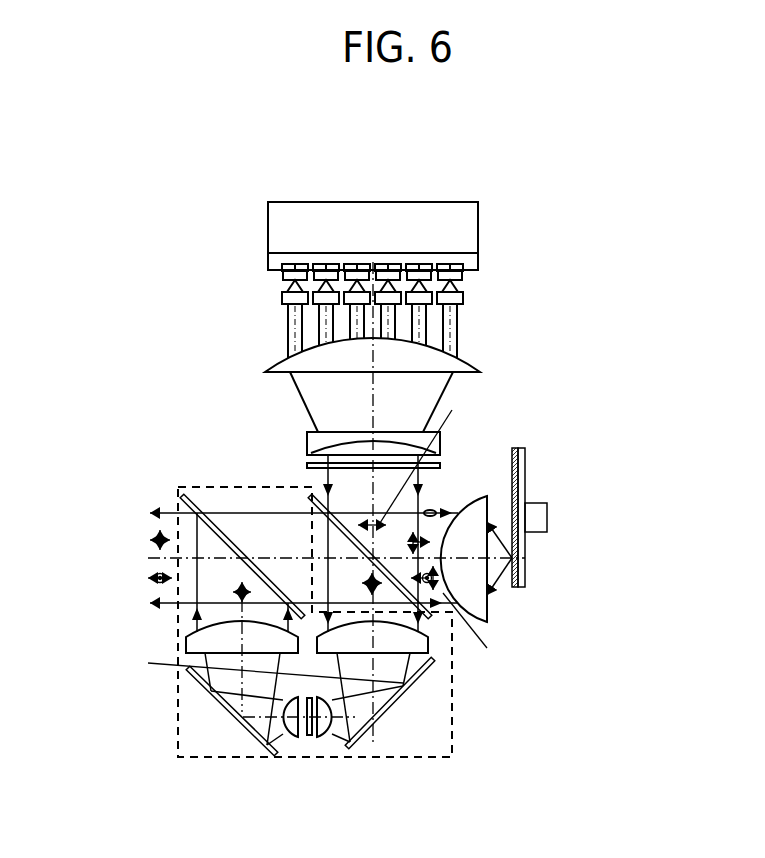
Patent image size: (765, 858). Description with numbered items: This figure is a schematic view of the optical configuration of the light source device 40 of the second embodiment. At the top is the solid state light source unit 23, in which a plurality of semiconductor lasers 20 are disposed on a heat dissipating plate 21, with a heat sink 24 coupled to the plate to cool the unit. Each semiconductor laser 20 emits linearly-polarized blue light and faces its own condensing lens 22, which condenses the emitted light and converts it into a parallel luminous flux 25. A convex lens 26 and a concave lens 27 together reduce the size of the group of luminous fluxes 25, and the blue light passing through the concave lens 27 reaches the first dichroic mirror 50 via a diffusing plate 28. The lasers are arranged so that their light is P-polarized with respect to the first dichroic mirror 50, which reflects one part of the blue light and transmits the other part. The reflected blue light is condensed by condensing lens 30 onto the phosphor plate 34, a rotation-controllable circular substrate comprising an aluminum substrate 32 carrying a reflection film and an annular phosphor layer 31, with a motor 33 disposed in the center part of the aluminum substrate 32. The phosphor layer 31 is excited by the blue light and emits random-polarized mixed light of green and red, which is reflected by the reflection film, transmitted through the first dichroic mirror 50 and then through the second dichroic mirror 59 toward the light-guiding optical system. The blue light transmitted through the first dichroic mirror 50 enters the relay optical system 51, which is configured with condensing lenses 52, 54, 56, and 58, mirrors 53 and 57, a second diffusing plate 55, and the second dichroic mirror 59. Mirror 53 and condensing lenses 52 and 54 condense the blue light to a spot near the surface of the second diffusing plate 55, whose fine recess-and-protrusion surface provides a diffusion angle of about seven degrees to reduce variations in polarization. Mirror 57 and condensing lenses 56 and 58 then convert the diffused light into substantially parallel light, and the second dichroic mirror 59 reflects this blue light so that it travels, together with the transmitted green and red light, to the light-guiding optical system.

The light source device 40 is at (397, 154).
The heat sink 24 is at (480, 222).
The solid state light source unit 23 is at (603, 217).
The heat dissipating plate 21 is at (482, 263).
The semiconductor laser 20 is at (465, 277).
The condensing lens 22 is at (467, 302).
The parallel luminous flux 25 is at (283, 327).
The convex lens 26 is at (265, 371).
The concave lens 27 is at (305, 430).
The diffusing plate 28 is at (440, 466).
The condensing lens 30 is at (464, 507).
The phosphor layer 31 is at (522, 588).
The aluminum substrate 32 is at (527, 570).
The motor 33 is at (547, 530).
The phosphor plate 34 is at (603, 530).
The first dichroic mirror 50 is at (313, 497).
The relay optical system 51 is at (452, 735).
The condensing lens 52 is at (430, 650).
The mirror 53 is at (422, 682).
The condensing lens 54 is at (326, 735).
The second diffusing plate 55 is at (308, 733).
The condensing lens 56 is at (288, 732).
The mirror 57 is at (220, 690).
The condensing lens 58 is at (186, 645).
The second dichroic mirror 59 is at (190, 496).